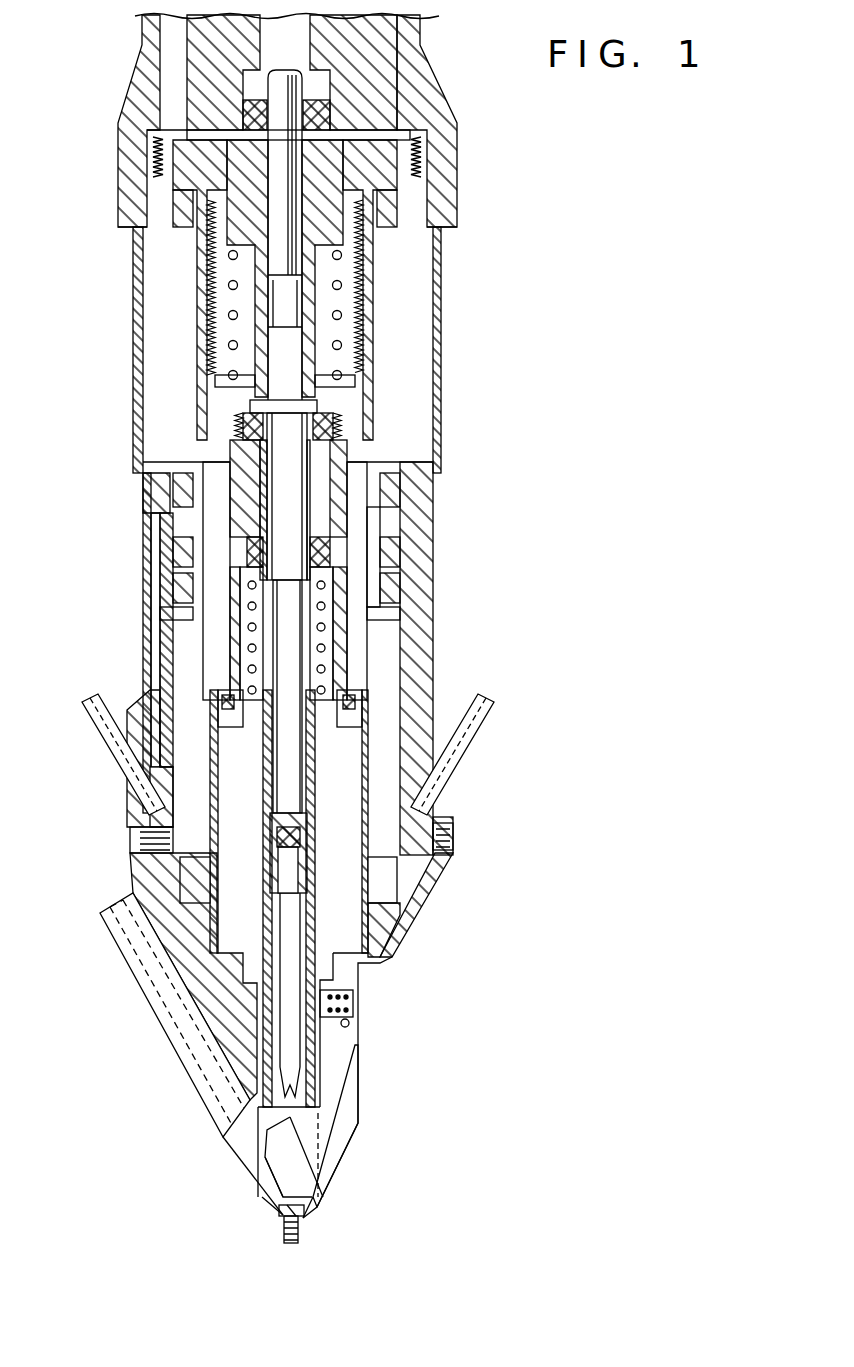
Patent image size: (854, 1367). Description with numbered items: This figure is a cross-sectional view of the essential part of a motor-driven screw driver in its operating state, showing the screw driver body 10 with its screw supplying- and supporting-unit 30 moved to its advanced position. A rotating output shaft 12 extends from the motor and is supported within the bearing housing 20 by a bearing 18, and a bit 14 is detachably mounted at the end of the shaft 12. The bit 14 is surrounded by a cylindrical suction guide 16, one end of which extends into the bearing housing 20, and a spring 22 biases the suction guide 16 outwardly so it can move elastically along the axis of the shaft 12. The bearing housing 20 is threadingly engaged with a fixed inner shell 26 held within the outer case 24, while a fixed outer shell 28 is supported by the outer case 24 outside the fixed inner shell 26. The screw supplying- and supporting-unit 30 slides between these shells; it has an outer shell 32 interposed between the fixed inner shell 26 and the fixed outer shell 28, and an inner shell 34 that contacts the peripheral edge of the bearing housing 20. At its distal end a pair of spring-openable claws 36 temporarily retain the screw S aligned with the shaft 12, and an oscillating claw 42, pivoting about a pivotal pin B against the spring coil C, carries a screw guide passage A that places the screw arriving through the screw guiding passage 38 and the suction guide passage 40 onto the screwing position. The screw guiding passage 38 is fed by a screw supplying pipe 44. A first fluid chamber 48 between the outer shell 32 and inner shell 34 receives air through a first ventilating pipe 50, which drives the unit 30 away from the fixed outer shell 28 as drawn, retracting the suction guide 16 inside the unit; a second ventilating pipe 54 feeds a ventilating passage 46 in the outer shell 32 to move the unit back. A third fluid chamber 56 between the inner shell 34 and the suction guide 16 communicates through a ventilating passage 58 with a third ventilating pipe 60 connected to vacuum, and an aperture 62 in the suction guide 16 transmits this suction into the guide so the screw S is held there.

The motor-driven screw driver body 10 is at (280, 128).
The rotating output shaft 12 is at (293, 482).
The bit 14 is at (290, 957).
The cylindrical suction guide 16 is at (320, 867).
The bearing 18 is at (237, 433).
The bearing housing 20 is at (250, 495).
The spring 22 is at (322, 632).
The outer case 24 is at (130, 115).
The fixed inner shell 26 is at (433, 275).
The fixed outer shell 28 is at (135, 383).
The screw supplying- and supporting-unit 30 is at (403, 948).
The outer shell 32 is at (170, 545).
The inner shell 34 is at (263, 730).
The openable claws 36 is at (275, 1210).
The screw guiding passage 38 is at (248, 1132).
The suction guide passage 40 is at (325, 1160).
The oscillating claw 42 is at (345, 1072).
The screw supplying pipe 44 is at (170, 1033).
The ventilating passage 46 is at (160, 590).
The first fluid chamber 48 is at (378, 672).
The first ventilating pipe 50 is at (490, 752).
The second ventilating pipe 54 is at (100, 752).
The third fluid chamber 56 is at (237, 853).
The ventilating passage 58 is at (201, 1141).
The third ventilating pipe 60 is at (145, 980).
The aperture 62 is at (235, 740).
The screw guide passage A is at (280, 1168).
The pivotal pin B is at (348, 1027).
The spring coil C is at (345, 1003).
The screw S is at (289, 1245).